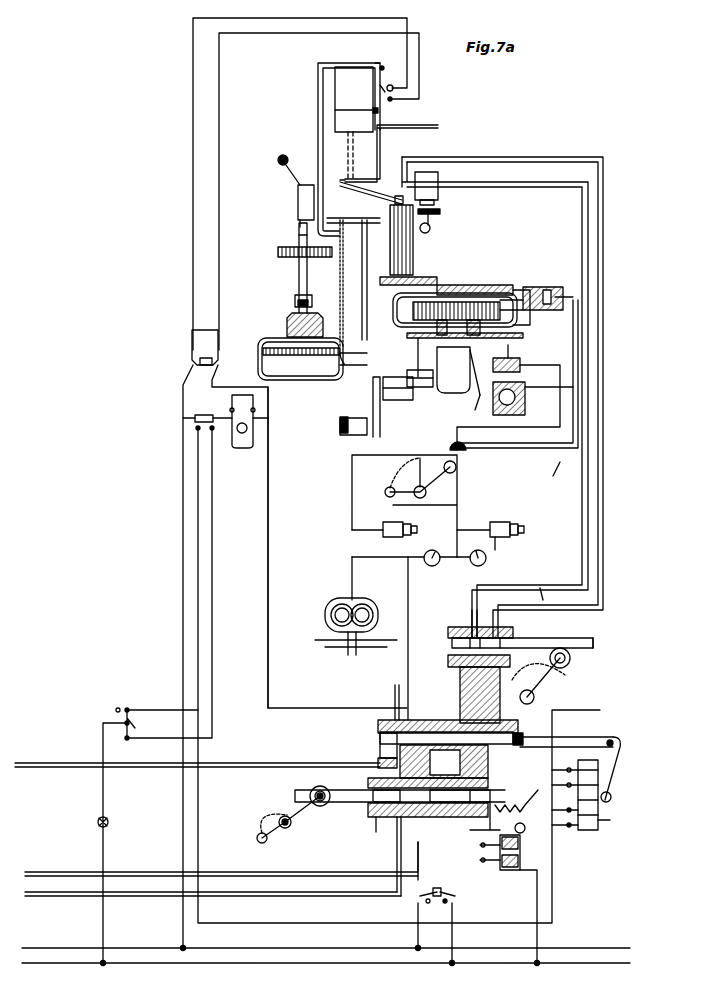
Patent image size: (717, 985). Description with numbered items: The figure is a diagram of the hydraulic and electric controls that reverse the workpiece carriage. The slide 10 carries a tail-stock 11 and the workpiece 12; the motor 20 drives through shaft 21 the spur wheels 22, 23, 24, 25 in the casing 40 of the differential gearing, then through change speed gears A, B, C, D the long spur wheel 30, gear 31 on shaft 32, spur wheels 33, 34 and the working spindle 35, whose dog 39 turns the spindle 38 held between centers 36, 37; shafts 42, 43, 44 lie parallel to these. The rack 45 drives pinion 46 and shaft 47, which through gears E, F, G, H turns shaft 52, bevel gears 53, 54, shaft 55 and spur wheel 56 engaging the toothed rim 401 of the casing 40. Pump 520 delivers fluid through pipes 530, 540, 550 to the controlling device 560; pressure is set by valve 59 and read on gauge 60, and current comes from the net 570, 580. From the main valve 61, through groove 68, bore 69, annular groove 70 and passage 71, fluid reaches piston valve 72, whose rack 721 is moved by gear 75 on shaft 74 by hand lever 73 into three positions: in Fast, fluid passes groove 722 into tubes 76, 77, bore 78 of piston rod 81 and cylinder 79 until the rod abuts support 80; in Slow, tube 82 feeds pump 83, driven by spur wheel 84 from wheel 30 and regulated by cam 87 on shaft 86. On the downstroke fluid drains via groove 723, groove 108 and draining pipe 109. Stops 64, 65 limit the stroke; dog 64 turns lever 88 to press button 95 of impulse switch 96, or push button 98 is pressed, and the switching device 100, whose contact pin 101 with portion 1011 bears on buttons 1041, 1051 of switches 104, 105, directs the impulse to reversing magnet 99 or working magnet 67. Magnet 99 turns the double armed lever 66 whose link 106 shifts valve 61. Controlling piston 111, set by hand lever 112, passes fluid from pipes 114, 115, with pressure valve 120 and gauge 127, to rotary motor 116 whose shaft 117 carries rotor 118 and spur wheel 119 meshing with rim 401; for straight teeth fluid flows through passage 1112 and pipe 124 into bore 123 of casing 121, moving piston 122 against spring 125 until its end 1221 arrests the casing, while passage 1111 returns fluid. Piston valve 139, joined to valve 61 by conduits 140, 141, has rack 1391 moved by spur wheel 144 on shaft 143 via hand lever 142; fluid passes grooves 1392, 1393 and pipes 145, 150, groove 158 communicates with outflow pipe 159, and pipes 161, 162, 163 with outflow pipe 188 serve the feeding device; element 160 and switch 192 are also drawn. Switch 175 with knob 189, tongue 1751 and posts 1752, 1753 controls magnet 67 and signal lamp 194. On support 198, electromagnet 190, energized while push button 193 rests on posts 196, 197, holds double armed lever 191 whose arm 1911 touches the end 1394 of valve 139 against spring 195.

The slide 10 is at (324, 308).
The tail-stock 11 is at (298, 205).
The workpiece 12 is at (278, 253).
The motor 20 is at (455, 378).
The shaft 21 is at (481, 372).
The spur wheel 22 is at (453, 370).
The spur wheel 23 is at (528, 290).
The spur wheel 24 is at (520, 290).
The spur wheel 25 is at (440, 311).
The long spur wheel 30 is at (390, 253).
The gear 31 is at (345, 216).
The shaft 32 is at (340, 270).
The spur wheel 33 is at (353, 301).
The spur wheel 34 is at (263, 352).
The working spindle 35 is at (290, 362).
The center 36 is at (298, 300).
The center 37 is at (298, 232).
The workpiece carrying spindle 38 is at (299, 273).
The dog 39 is at (312, 297).
The casing of the differential gearing 40 is at (520, 315).
The shaft 42 is at (475, 283).
The shaft 43 is at (437, 281).
The shaft 44 is at (434, 203).
The rack 45 is at (340, 420).
The pinion 46 is at (340, 437).
The shaft 47 is at (247, 430).
The shaft 52 is at (398, 396).
The bevel gear 53 is at (422, 408).
The bevel gear 54 is at (422, 386).
The shaft 55 is at (418, 360).
The spur wheel 56 is at (407, 336).
The valve 59 is at (384, 536).
The pressure gauge 60 is at (440, 562).
The main valve 61 is at (378, 722).
The stop 64 is at (380, 111).
The stop 65 is at (378, 68).
The double armed lever 66 is at (611, 797).
The working magnet 67 is at (610, 820).
The circular groove 68 is at (375, 715).
The bore 69 is at (395, 690).
The annular groove 70 is at (508, 736).
The passage 71 is at (470, 697).
The piston valve 72 is at (452, 645).
The hand lever 73 is at (540, 695).
The shaft 74 is at (566, 648).
The gear 75 is at (570, 658).
The tube 76 is at (603, 500).
The tube 77 is at (392, 165).
The bore 78 is at (365, 148).
The cylinder 79 is at (354, 99).
The support 80 is at (323, 178).
The piston rod 81 is at (364, 156).
The tube 82 is at (549, 584).
The pump 83 is at (432, 178).
The spur wheel 84 is at (440, 212).
The shaft 86 is at (437, 229).
The cam 87 is at (440, 230).
The lever 88 is at (390, 70).
The switch button 95 is at (393, 88).
The impulse switch 96 is at (393, 99).
The push button 98 is at (205, 345).
The reversing magnet 99 is at (598, 778).
The switching device 100 is at (248, 445).
The contact pin 101 is at (513, 695).
The circuit controlling device 104 is at (282, 420).
The circuit controlling device 105 is at (230, 412).
The link 106 is at (570, 737).
The annular groove 108 is at (500, 752).
The draining pipe 109 is at (490, 750).
The controlling piston 111 is at (436, 480).
The hand lever 112 is at (390, 514).
The pipe 114 is at (432, 505).
The pipe 115 is at (440, 475).
The rotary motor 116 is at (525, 372).
The shaft 117 is at (530, 365).
The rotor 118 is at (573, 392).
The spur wheel 119 is at (546, 347).
The pressure controlling valve 120 is at (500, 522).
The small casing 121 is at (560, 288).
The piston 122 is at (540, 305).
The bore 123 is at (573, 300).
The pipe 124 is at (520, 396).
The spring 125 is at (530, 310).
The pressure gauge 127 is at (486, 562).
The piston valve 139 is at (420, 817).
The conduit 140 is at (303, 787).
The conduit 141 is at (615, 750).
The hand lever 142 is at (290, 828).
The shaft 143 is at (296, 795).
The spur wheel 144 is at (294, 828).
The pipe 145 is at (320, 880).
The pipe 150 is at (213, 902).
The annular groove 158 is at (368, 778).
The outflow pipe 159 is at (420, 720).
The rod 160 is at (360, 829).
The pipe 161 is at (380, 740).
The pipe 162 is at (378, 748).
The pipe 163 is at (215, 770).
The switch 175 is at (127, 730).
The outflow pipe 188 is at (395, 700).
The knob 189 is at (135, 728).
The electromagnet 190 is at (518, 860).
The double armed lever 191 is at (518, 849).
The switch 192 is at (183, 418).
The push button 193 is at (440, 888).
The signal lamp 194 is at (108, 822).
The spring 195 is at (525, 830).
The post 196 is at (420, 892).
The post 197 is at (448, 897).
The support 198 is at (500, 865).
The toothed rim 401 is at (483, 409).
The pump 520 is at (378, 622).
The pipe 530 is at (352, 572).
The pipe 540 is at (377, 557).
The pipe 550 is at (410, 622).
The controlling device 560 is at (448, 662).
The net 570 is at (340, 948).
The net 580 is at (340, 965).
The rack 721 is at (593, 640).
The annular groove 722 is at (468, 625).
The annular groove 723 is at (525, 625).
The projecting portion of contact pin 1011 is at (240, 395).
The button 1041 is at (255, 410).
The button 1051 is at (230, 413).
The passage 1111 is at (462, 452).
The passage 1112 is at (456, 467).
The outer end of piston rod 1221 is at (553, 290).
The rack 1391 is at (355, 804).
The annular groove 1392 is at (448, 817).
The annular groove 1393 is at (388, 820).
The right end of piston 1394 is at (497, 801).
The tongue 1751 is at (127, 738).
The contact post 1752 is at (140, 702).
The contact post 1753 is at (116, 710).
The arm 1911 is at (529, 789).
The change speed gear A is at (479, 274).
The change speed gear B is at (452, 304).
The change speed gear C is at (420, 276).
The change speed gear D is at (376, 276).
The change speed gear E is at (390, 431).
The change speed gear F is at (375, 407).
The change speed gear G is at (405, 437).
The change speed gear H is at (372, 362).